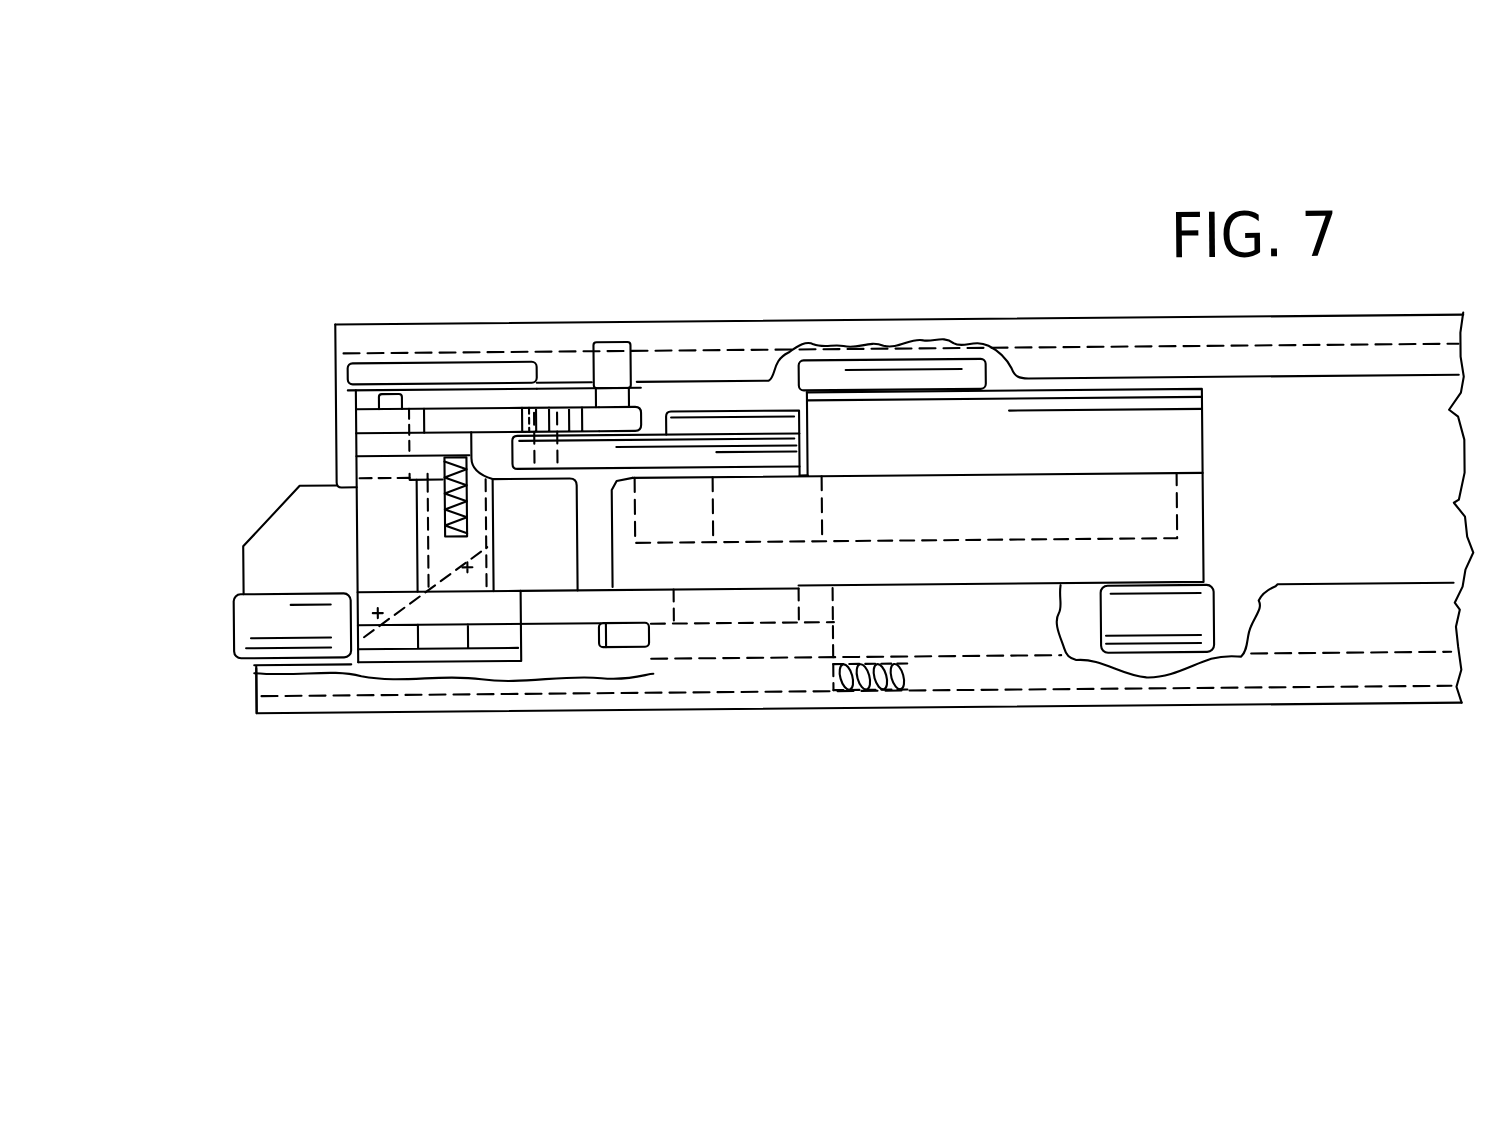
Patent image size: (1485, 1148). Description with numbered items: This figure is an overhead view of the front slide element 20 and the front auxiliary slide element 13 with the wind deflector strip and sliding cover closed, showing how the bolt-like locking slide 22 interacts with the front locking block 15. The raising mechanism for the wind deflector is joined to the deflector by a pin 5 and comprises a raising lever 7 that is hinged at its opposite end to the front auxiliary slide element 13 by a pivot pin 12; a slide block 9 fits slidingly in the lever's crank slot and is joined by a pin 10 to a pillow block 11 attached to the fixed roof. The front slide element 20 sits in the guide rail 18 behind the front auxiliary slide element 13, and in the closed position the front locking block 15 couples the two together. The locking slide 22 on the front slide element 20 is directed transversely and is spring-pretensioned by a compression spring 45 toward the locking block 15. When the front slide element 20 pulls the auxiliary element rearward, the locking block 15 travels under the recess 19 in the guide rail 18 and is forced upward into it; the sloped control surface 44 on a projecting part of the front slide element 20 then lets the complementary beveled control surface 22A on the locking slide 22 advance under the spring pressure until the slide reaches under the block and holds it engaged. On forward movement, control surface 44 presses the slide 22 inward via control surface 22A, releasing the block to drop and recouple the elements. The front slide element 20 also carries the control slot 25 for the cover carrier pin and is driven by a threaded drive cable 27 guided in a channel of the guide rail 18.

The pin 5 is at (620, 340).
The raising lever 7 is at (463, 410).
The slide block 9 is at (529, 419).
The pin 10 is at (553, 425).
The pillow block 11 is at (725, 446).
The pivot pin 12 is at (387, 422).
The front auxiliary slide element 13 is at (520, 559).
The front locking block 15 is at (440, 628).
The guide rail 18 is at (1288, 651).
The recess 19 is at (628, 635).
The front slide element 20 is at (647, 558).
The locking slide 22 is at (435, 550).
The control surface 22A is at (330, 583).
The control slot 25 is at (1000, 509).
The threaded drive cable 27 is at (875, 690).
The control surface 44 is at (350, 679).
The compression spring 45 is at (440, 513).